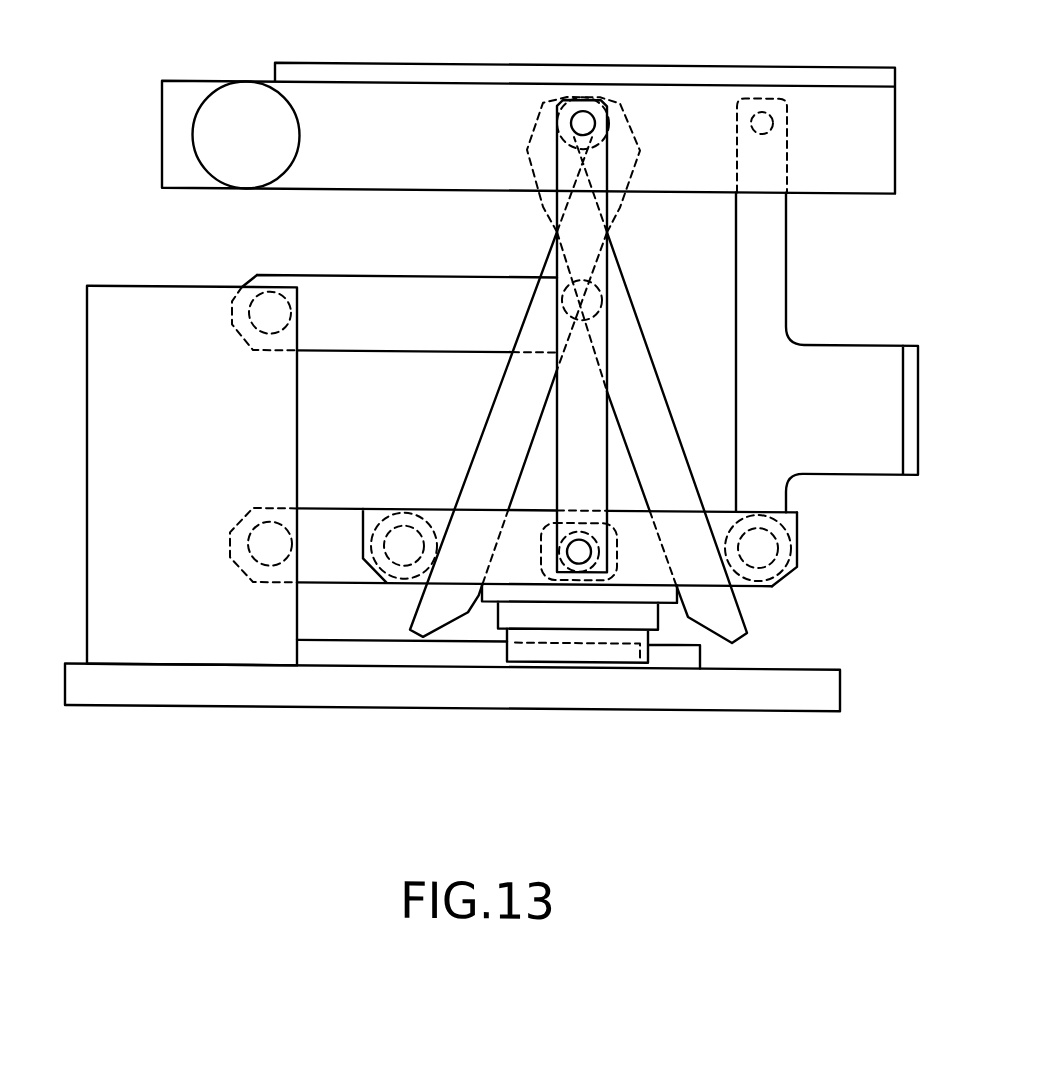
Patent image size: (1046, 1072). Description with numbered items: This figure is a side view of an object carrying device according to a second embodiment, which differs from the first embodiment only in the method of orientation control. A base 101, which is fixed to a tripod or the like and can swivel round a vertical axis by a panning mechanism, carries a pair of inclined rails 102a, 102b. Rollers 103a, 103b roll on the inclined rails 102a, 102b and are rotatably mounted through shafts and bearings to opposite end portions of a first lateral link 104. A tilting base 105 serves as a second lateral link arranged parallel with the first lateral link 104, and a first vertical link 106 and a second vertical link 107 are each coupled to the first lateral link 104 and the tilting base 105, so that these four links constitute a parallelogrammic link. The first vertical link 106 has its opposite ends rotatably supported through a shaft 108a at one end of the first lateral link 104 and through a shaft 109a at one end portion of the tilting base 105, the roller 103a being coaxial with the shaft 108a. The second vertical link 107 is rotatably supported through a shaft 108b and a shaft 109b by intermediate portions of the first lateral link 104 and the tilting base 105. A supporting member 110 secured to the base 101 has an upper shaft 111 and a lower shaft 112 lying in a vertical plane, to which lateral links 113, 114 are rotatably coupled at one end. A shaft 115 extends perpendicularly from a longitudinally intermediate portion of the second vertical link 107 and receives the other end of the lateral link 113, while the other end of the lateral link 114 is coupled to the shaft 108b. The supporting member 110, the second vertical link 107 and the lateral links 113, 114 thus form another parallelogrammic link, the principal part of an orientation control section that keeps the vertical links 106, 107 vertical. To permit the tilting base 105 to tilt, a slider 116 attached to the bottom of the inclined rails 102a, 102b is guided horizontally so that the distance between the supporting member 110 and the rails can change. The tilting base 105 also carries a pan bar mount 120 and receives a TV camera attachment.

The base 101 is at (128, 688).
The inclined rail 102a is at (650, 402).
The inclined rail 102b is at (500, 414).
The roller 103a is at (800, 521).
The roller 103b is at (382, 504).
The first lateral link 104 is at (435, 520).
The tilting base 105 is at (847, 177).
The first vertical link 106 is at (767, 297).
The second vertical link 107 is at (600, 267).
The shaft 108a is at (787, 567).
The shaft 108b is at (579, 548).
The shaft 109a is at (768, 106).
The shaft 109b is at (583, 106).
The supporting member 110 is at (118, 292).
The upper shaft 111 is at (236, 311).
The lower shaft 112 is at (238, 543).
The lateral link 113 is at (357, 292).
The lateral link 114 is at (333, 570).
The shaft 115 is at (626, 293).
The slider 116 is at (648, 632).
The pan bar mount 120 is at (240, 104).